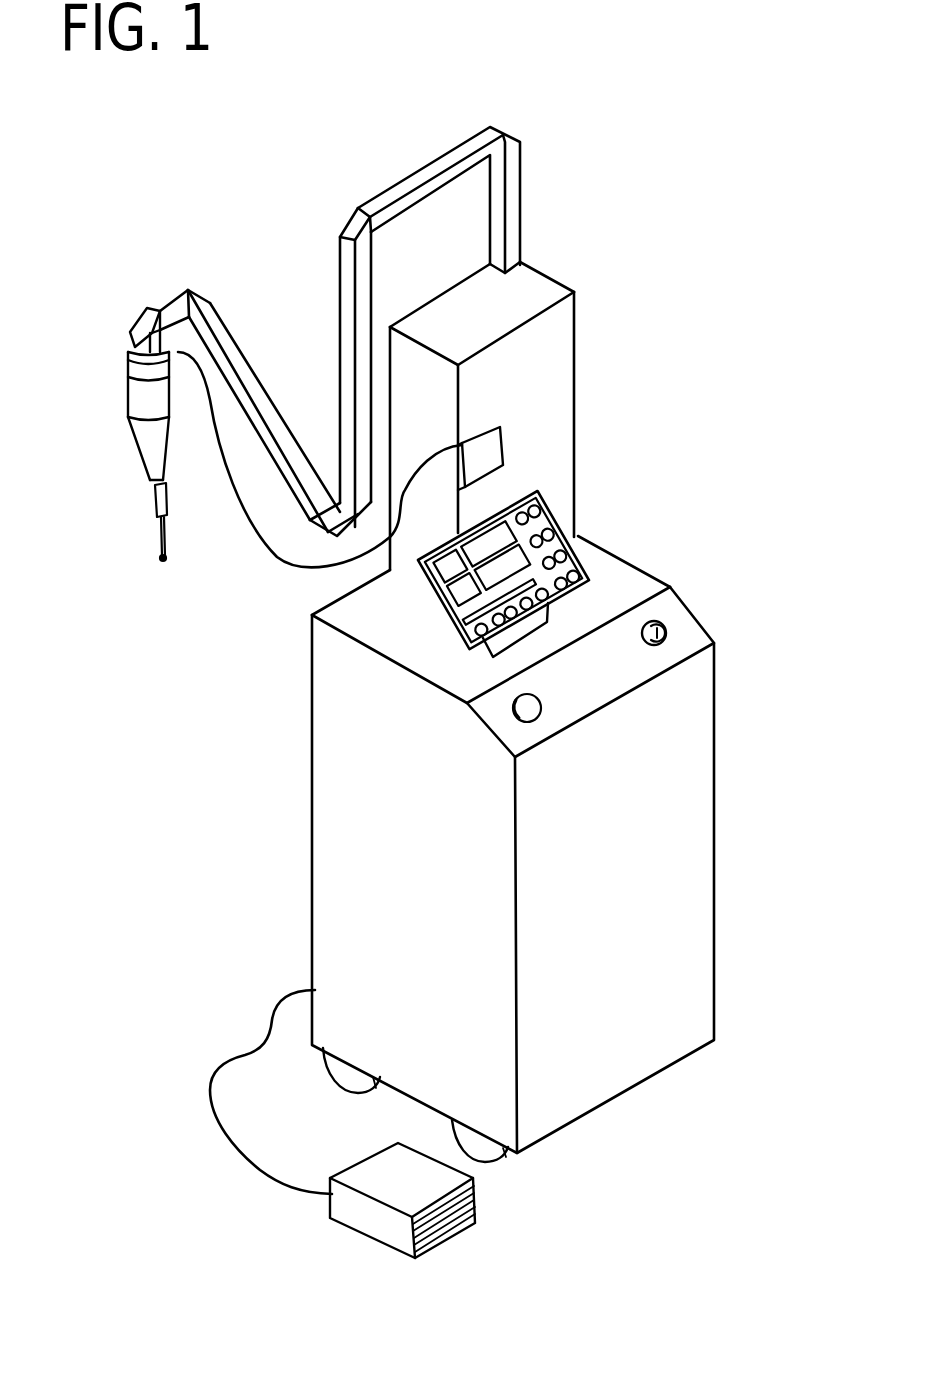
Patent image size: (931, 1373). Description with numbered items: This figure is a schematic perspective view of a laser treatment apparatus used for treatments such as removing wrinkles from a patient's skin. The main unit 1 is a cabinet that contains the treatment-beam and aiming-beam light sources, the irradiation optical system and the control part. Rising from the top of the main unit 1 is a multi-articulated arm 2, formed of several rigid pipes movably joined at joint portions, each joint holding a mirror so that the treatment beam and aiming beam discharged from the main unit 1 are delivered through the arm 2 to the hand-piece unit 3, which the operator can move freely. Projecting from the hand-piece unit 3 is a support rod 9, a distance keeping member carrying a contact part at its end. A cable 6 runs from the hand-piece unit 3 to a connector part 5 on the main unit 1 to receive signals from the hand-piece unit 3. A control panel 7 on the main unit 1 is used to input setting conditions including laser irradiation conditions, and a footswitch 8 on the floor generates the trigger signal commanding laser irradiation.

The main unit 1 is at (689, 868).
The multi-articulated arm 2 is at (355, 193).
The hand-piece unit 3 is at (114, 455).
The connector part 5 is at (495, 447).
The cable 6 is at (287, 558).
The control panel 7 is at (568, 565).
The footswitch 8 is at (400, 1183).
The support rod 9 is at (157, 518).